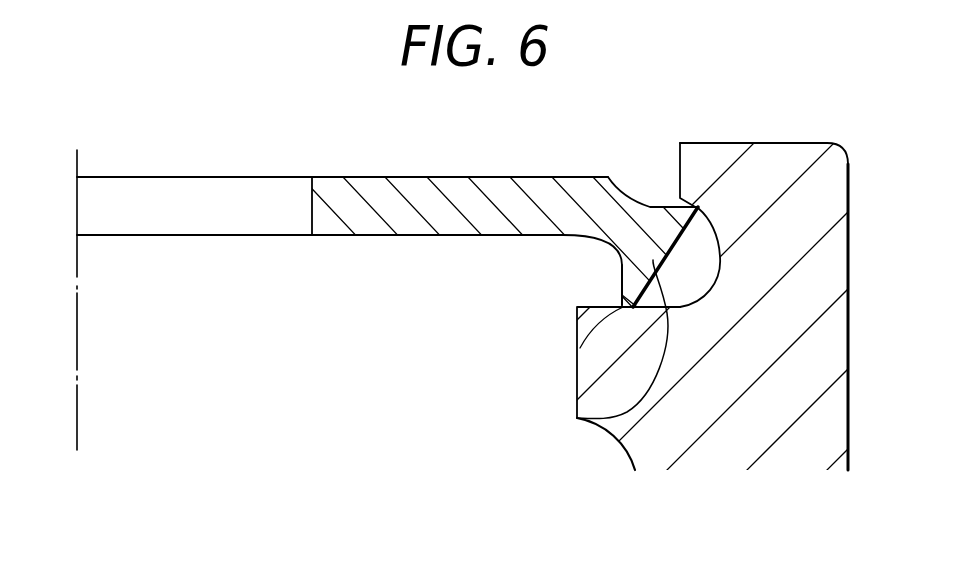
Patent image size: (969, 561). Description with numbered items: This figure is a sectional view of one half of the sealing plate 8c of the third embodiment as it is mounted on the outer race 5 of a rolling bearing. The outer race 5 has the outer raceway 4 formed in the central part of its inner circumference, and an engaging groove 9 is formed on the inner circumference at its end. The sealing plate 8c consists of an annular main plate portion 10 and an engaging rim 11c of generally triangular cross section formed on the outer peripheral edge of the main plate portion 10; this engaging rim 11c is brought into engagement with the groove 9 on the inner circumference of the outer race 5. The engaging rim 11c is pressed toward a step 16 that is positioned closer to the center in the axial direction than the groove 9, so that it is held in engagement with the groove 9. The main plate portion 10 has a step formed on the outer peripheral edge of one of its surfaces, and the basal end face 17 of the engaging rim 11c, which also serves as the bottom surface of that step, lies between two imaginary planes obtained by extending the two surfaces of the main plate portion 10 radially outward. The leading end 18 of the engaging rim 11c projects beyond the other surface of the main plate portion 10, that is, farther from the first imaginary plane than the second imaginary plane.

The main plate portion 10 is at (368, 183).
The sealing plate 8c is at (450, 183).
The basal end face 17 is at (648, 205).
The engaging groove 9 is at (713, 282).
The step 16 is at (605, 305).
The leading end 18 is at (577, 340).
The engaging rim 11c is at (577, 418).
The outer raceway 4 is at (623, 455).
The outer race 5 is at (723, 368).